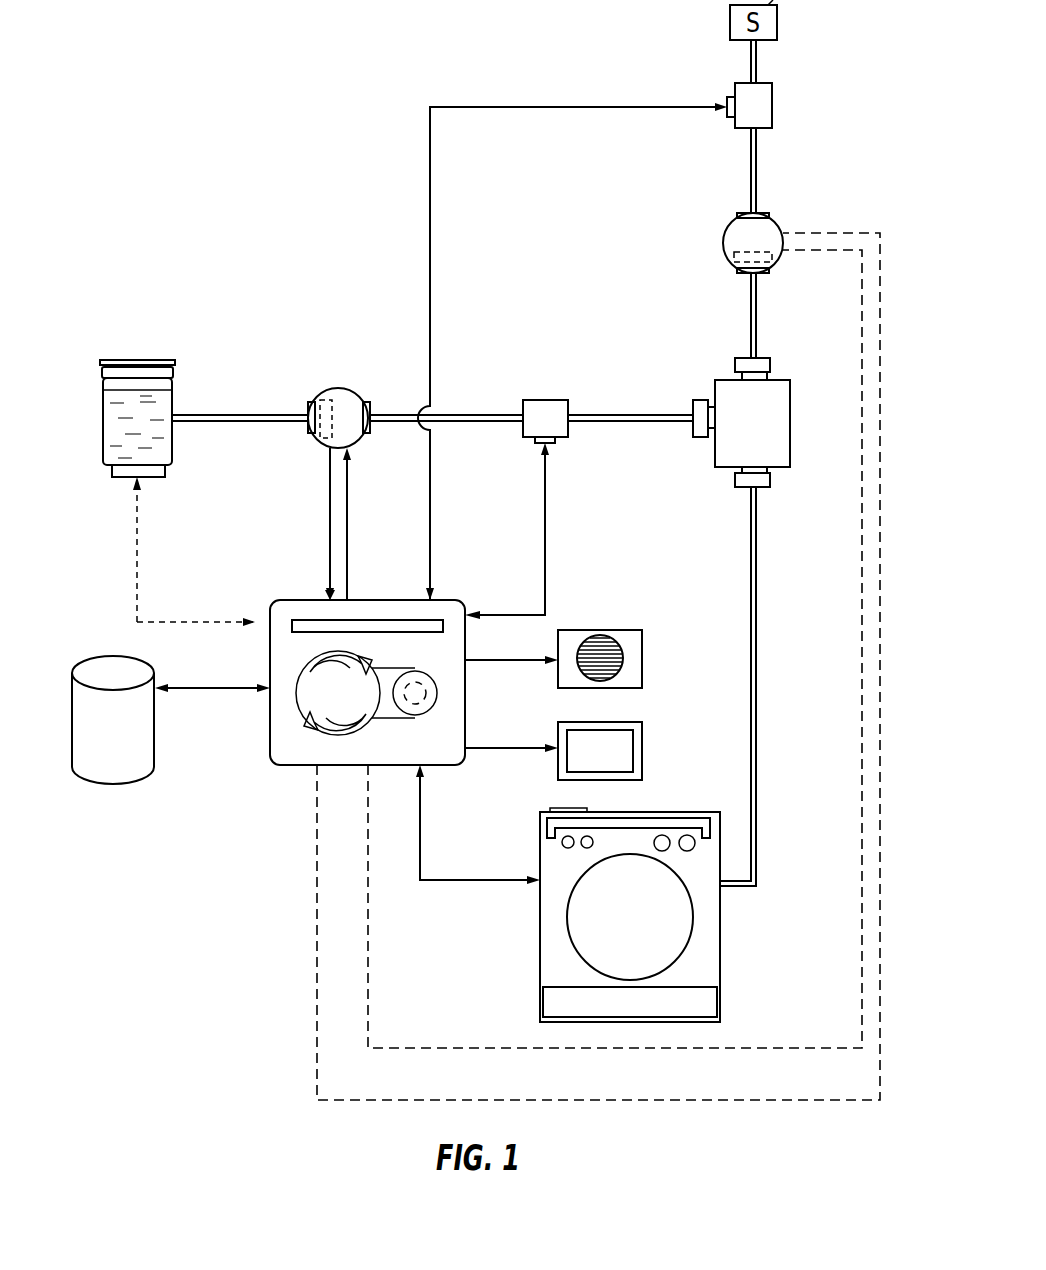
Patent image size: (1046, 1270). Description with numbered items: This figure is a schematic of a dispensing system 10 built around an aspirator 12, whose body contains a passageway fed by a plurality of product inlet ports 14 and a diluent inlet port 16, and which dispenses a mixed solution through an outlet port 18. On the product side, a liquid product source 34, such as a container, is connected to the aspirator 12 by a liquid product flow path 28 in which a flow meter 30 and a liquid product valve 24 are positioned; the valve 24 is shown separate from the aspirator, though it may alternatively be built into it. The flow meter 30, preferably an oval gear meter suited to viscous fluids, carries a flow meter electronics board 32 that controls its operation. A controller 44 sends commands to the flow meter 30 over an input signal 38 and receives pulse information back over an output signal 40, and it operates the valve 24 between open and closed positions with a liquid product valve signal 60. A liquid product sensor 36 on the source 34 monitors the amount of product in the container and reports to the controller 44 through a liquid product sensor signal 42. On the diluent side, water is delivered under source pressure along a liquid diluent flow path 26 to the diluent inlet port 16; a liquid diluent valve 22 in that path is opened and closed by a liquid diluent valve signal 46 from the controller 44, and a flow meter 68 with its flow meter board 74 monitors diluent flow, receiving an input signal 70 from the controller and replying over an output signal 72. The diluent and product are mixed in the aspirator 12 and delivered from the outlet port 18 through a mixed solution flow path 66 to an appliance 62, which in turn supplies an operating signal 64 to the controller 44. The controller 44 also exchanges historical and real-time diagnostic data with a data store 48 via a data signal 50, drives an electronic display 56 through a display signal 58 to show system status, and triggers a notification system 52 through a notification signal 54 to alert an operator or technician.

The dispensing system 10 is at (172, 208).
The aspirator 12 is at (780, 381).
The product inlet ports 14 is at (692, 428).
The diluent inlet port 16 is at (742, 360).
The outlet port 18 is at (748, 487).
The liquid diluent valve 22 is at (765, 83).
The liquid product valve 24 is at (558, 400).
The liquid diluent flow path 26 is at (758, 150).
The liquid product flow path 28 is at (226, 415).
The flow meter 30 is at (348, 391).
The flow meter electronics board 32 is at (321, 446).
The liquid product source 34 is at (157, 361).
The liquid product sensor 36 is at (124, 478).
The input signal 38 is at (349, 522).
The output signal 40 is at (329, 522).
The liquid product sensor signal 42 is at (136, 565).
The controller 44 is at (290, 600).
The liquid diluent valve signal 46 is at (447, 106).
The data store 48 is at (106, 660).
The data signal 50 is at (208, 690).
The notification system 52 is at (616, 630).
The notification signal 54 is at (490, 662).
The electronic display 56 is at (614, 722).
The display signal 58 is at (490, 750).
The liquid product valve signal 60 is at (546, 553).
The appliance 62 is at (678, 812).
The operating signal 64 is at (443, 880).
The mixed solution flow path 66 is at (750, 650).
The flow meter 68 is at (733, 232).
The input signal 70 is at (370, 975).
The output signal 72 is at (316, 932).
The flow meter board 74 is at (735, 266).